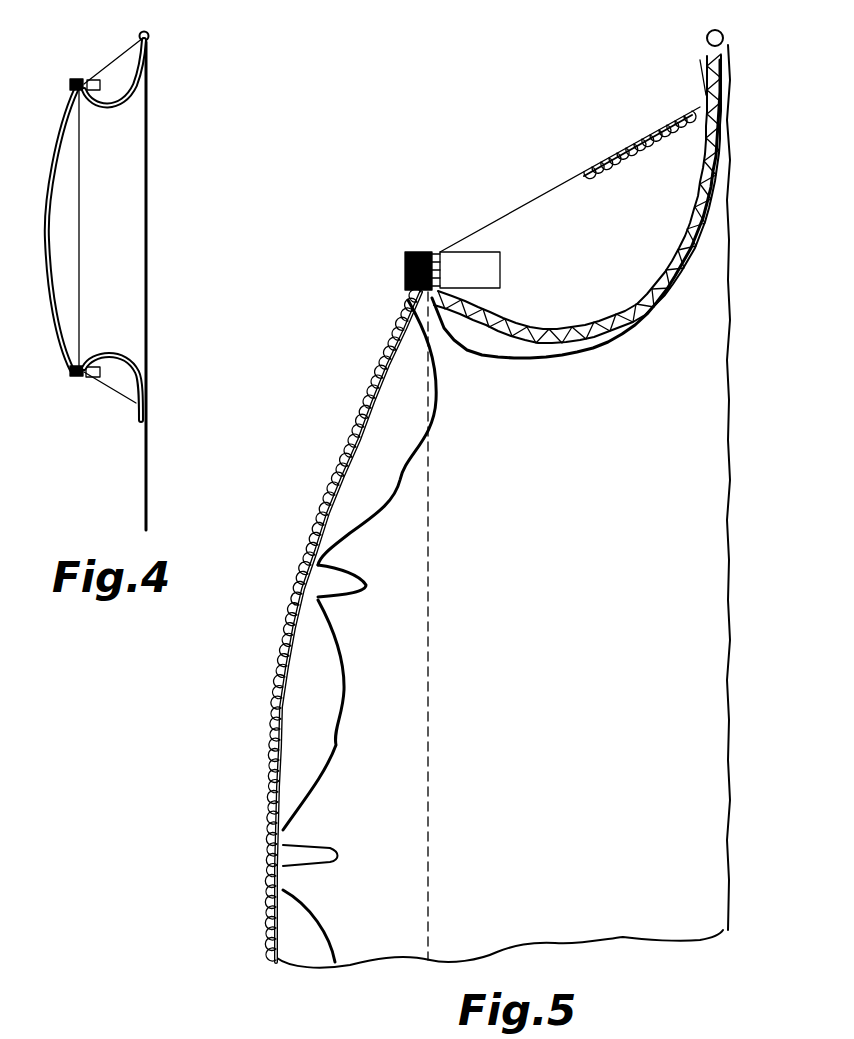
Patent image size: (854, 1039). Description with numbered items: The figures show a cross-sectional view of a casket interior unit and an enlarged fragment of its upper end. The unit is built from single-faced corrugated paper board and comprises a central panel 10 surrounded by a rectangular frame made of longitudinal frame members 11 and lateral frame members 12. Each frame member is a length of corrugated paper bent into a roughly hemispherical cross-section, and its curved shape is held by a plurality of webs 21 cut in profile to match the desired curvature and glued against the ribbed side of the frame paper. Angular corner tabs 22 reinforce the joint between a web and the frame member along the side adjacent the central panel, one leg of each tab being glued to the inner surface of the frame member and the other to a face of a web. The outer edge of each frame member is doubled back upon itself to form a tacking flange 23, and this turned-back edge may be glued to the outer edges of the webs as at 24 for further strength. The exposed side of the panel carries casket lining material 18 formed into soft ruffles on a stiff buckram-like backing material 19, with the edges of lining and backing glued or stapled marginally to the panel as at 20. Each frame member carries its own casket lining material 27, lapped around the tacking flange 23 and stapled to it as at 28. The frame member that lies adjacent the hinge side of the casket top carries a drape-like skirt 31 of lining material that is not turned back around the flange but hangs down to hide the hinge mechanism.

In FIG. 4, the central panel 10 is at (48, 231).
In FIG. 5, the central panel 10 is at (264, 732).
In FIG. 4, the longitudinal frame member 11 is at (124, 86).
In FIG. 5, the longitudinal frame member 11 is at (600, 316).
In FIG. 4, the lateral frame member 12 is at (126, 255).
In FIG. 5, the casket lining material 18 is at (336, 742).
In FIG. 4, the backing material 19 is at (81, 212).
In FIG. 5, the backing material 19 is at (386, 405).
In FIG. 5, the marginal attachment of lining edges 20 is at (422, 250).
In FIG. 4, the web 21 is at (108, 70).
In FIG. 5, the web 21 is at (555, 197).
In FIG. 4, the angular corner tab 22 is at (84, 80).
In FIG. 5, the angular corner tab 22 is at (470, 262).
In FIG. 5, the tacking flange 23 is at (703, 80).
In FIG. 5, the glued turned-back edge 24 is at (632, 150).
In FIG. 5, the casket lining material 27 is at (730, 640).
In FIG. 5, the staples 28 is at (709, 36).
In FIG. 4, the drape-like skirt 31 is at (148, 474).